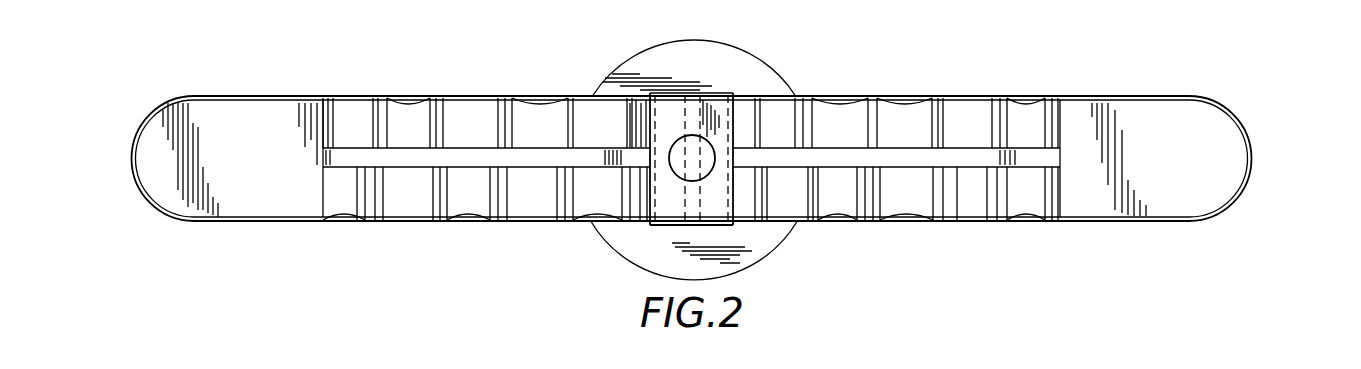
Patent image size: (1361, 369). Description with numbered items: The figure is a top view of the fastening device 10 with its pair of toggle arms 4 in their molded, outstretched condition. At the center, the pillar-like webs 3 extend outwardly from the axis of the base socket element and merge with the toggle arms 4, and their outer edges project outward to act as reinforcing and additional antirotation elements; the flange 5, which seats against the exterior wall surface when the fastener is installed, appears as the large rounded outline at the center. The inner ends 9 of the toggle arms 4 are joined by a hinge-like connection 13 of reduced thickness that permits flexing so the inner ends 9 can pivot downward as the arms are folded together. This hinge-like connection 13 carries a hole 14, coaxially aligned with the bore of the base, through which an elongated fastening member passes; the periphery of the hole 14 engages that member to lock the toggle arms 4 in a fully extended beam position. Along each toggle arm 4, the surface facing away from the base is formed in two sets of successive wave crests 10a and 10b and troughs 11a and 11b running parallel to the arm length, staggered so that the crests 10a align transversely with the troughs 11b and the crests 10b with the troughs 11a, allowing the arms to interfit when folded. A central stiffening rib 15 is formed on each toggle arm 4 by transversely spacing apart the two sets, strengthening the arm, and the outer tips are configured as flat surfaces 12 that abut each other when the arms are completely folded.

The pillar-like webs 3 is at (550, 90).
The toggle arms 4 is at (274, 97).
The flange 5 is at (662, 65).
The inner ends 9 is at (647, 122).
The fastening device 10 is at (785, 38).
The wave crests 10a is at (406, 112).
The wave crests 10b is at (345, 203).
The troughs 11a is at (352, 108).
The troughs 11b is at (410, 200).
The flat surfaces 12 is at (203, 110).
The hinge-like connection 13 is at (672, 223).
The hole 14 is at (683, 169).
The central stiffening rib 15 is at (330, 155).